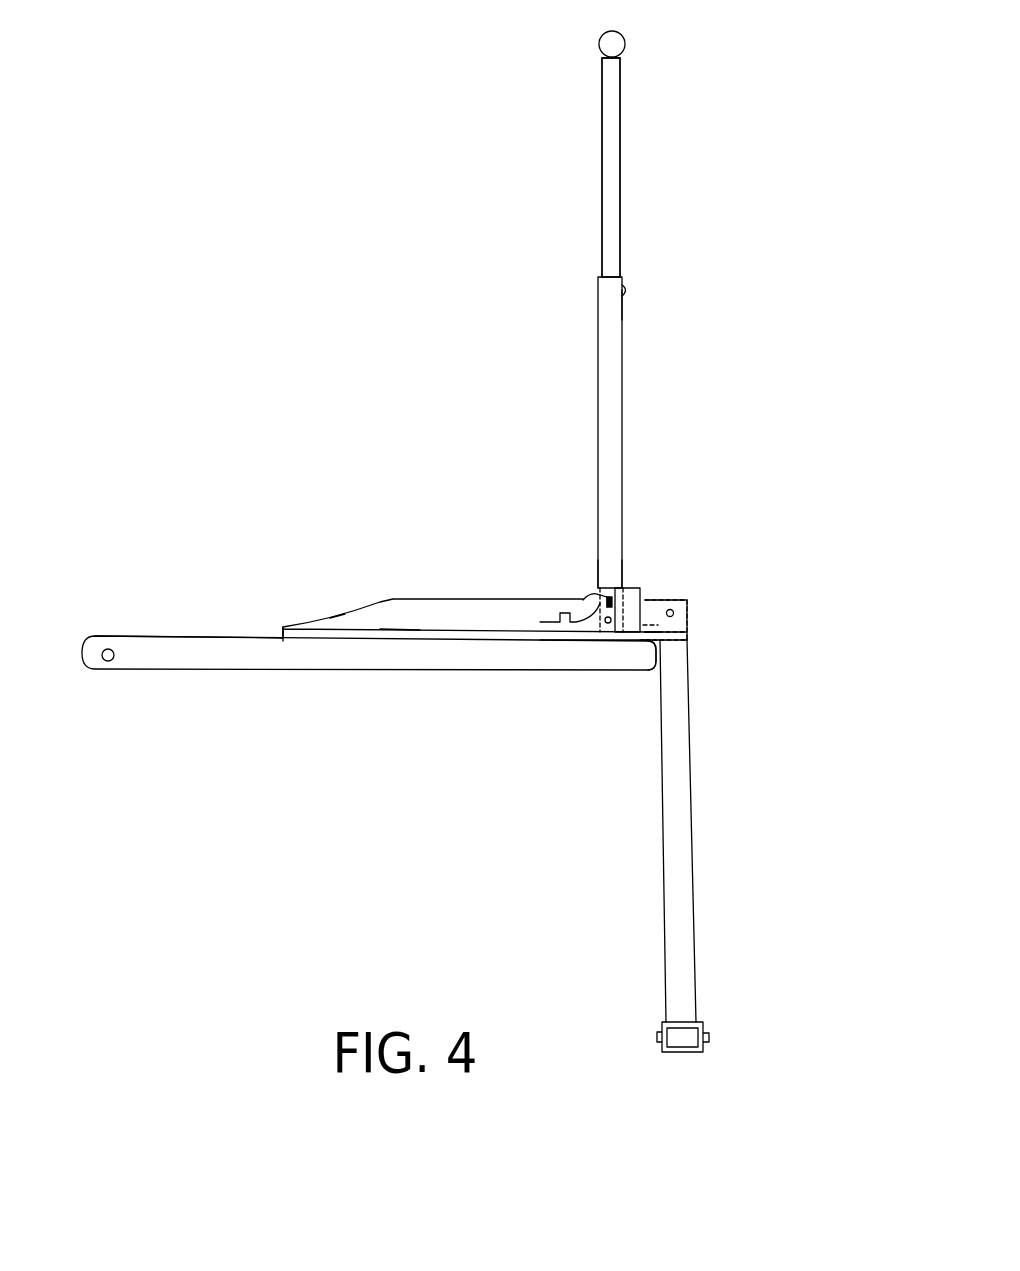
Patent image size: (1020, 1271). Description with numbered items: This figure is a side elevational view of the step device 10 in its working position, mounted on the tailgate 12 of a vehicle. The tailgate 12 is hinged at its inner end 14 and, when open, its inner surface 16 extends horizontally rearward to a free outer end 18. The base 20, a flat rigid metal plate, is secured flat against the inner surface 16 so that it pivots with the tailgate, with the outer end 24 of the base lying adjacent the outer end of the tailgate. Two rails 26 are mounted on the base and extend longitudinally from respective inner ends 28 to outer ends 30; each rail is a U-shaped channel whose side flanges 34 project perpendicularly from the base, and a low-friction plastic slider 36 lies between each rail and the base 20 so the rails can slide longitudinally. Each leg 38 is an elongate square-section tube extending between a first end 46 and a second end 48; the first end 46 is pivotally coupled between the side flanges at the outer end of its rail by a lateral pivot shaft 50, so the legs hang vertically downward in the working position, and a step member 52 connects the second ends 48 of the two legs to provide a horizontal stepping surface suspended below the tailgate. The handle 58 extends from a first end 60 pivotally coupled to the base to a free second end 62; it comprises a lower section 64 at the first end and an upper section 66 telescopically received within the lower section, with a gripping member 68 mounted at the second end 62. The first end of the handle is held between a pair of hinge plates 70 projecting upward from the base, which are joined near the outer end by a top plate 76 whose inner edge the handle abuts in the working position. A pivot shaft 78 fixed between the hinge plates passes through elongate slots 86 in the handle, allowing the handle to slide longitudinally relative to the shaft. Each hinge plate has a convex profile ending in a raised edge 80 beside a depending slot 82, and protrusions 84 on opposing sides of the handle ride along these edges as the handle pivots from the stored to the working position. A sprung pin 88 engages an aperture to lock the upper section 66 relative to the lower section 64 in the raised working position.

The step device 10 is at (432, 336).
The tailgate 12 is at (345, 660).
The inner end 14 is at (114, 661).
The inner surface 16 is at (243, 634).
The free outer end 18 is at (661, 656).
The base 20 is at (300, 641).
The outer end 24 is at (661, 643).
The rails 26 is at (380, 601).
The inner ends 28 is at (283, 627).
The outer ends 30 is at (690, 613).
The side flanges 34 is at (338, 623).
The slider 36 is at (400, 632).
The leg 38 is at (690, 852).
The first end 46 is at (687, 640).
The second end 48 is at (685, 1053).
The lateral pivot shaft 50 is at (673, 612).
The step member 52 is at (710, 1017).
The handle 58 is at (678, 305).
The first end 60 is at (626, 571).
The second end 62 is at (621, 65).
The lower section 64 is at (612, 357).
The upper section 66 is at (615, 170).
The gripping member 68 is at (625, 42).
The hinge plates 70 is at (588, 640).
The top plate 76 is at (646, 588).
The pivot shaft 78 is at (635, 640).
The raised edge 80 is at (583, 599).
The slot 82 is at (600, 592).
The protrusions 84 is at (607, 596).
The elongate slots 86 is at (610, 640).
The sprung pin 88 is at (630, 289).